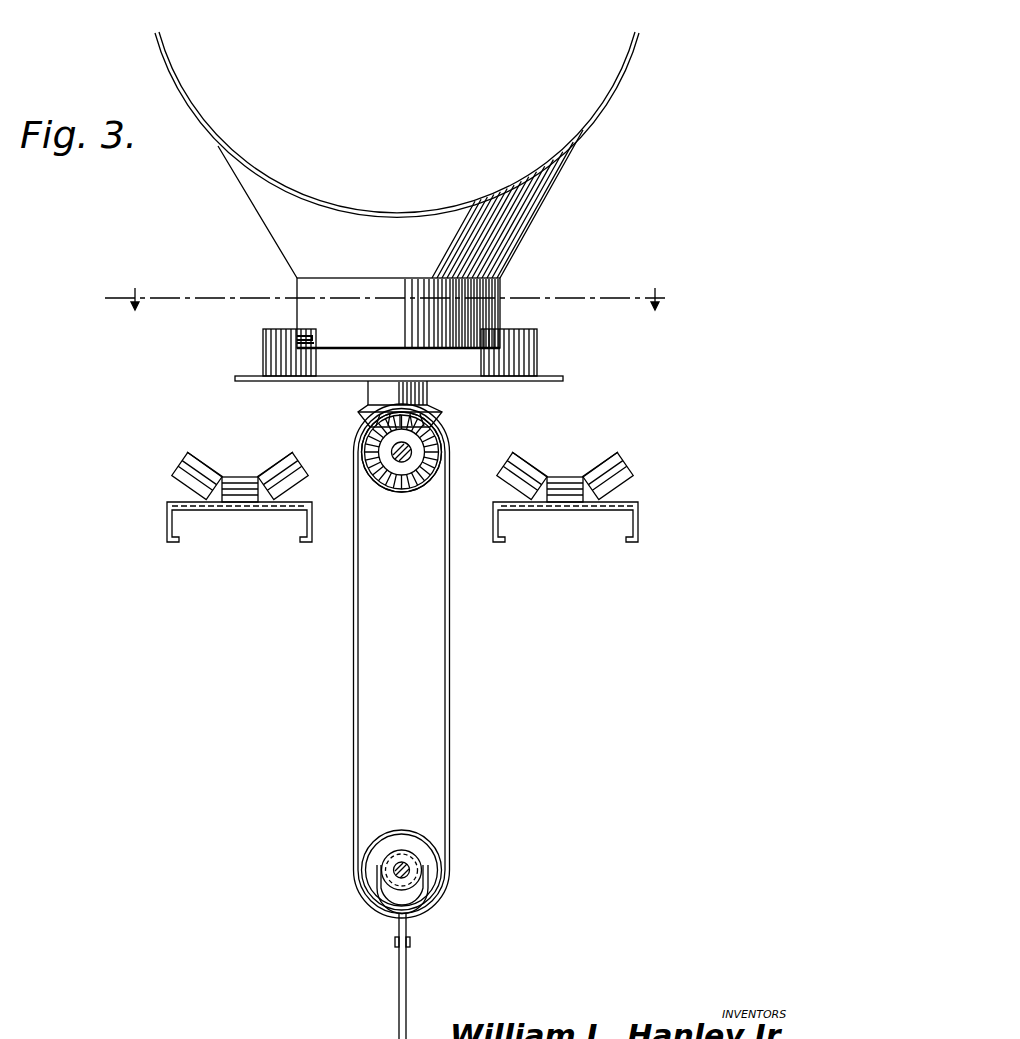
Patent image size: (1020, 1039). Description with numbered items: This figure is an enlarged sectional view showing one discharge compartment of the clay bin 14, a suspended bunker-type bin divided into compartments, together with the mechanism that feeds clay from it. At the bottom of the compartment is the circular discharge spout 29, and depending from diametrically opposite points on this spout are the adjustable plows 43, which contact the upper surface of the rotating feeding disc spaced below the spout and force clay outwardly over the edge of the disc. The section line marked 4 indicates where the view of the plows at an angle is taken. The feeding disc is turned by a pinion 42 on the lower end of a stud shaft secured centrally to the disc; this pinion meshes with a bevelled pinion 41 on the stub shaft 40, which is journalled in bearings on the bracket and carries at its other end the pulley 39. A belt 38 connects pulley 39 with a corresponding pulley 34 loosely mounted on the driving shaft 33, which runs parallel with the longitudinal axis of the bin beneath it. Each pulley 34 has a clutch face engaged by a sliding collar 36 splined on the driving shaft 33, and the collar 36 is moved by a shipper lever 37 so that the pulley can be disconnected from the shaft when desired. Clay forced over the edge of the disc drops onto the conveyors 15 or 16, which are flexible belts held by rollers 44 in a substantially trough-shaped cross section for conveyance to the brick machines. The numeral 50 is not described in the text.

The clay bin 14 is at (625, 78).
The circular discharge spout 29 is at (488, 298).
The section line 4- 4 is at (398, 298).
The plows 43 is at (263, 348).
The base plate 50 is at (246, 378).
The pinion 42 is at (374, 412).
The bevelled pinion 41 is at (362, 452).
The stub shaft 40 is at (410, 452).
The pulley 39 is at (402, 492).
The belt 38 is at (450, 620).
The pulley 34 is at (402, 830).
The sliding collar 36 is at (412, 852).
The driving shaft 33 is at (418, 862).
The shipper lever 37 is at (396, 961).
The conveyor 15 is at (233, 472).
The conveyor 16 is at (558, 470).
The rollers 44 is at (178, 475).